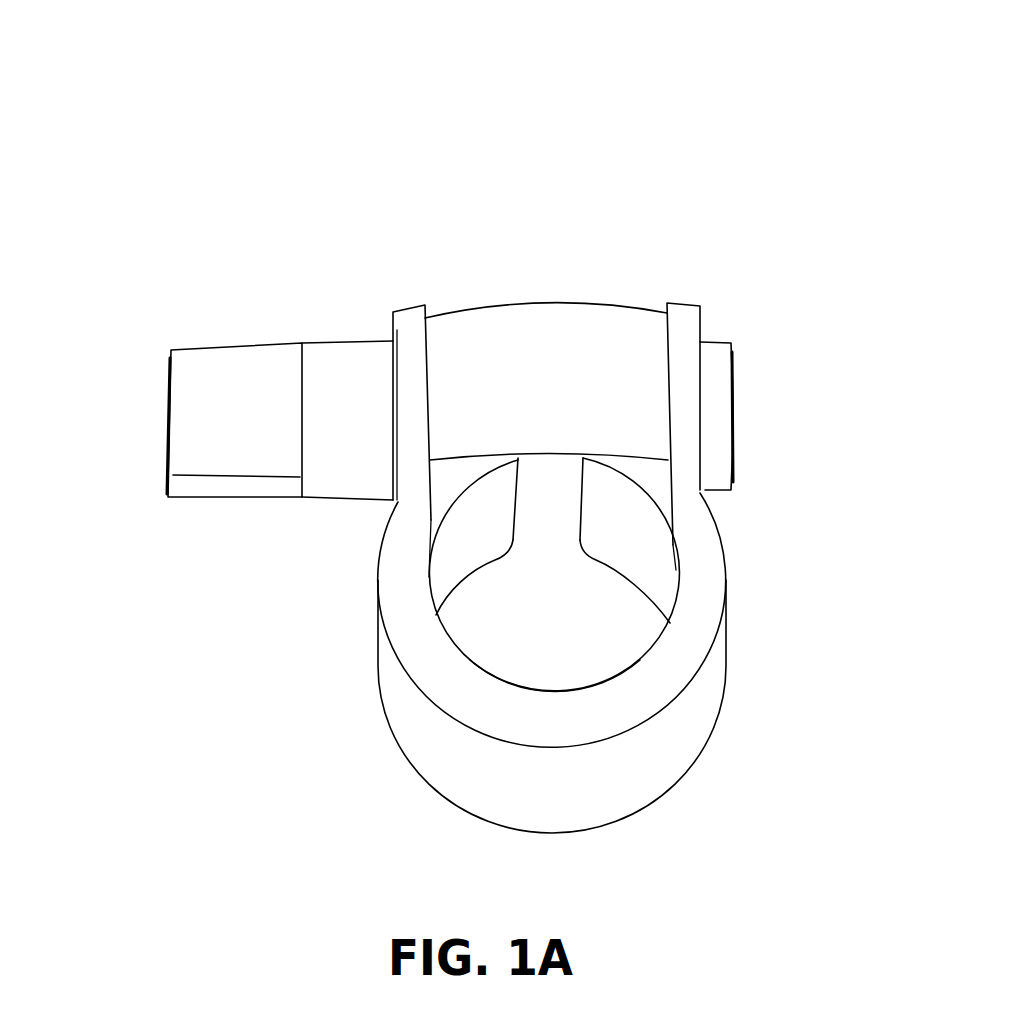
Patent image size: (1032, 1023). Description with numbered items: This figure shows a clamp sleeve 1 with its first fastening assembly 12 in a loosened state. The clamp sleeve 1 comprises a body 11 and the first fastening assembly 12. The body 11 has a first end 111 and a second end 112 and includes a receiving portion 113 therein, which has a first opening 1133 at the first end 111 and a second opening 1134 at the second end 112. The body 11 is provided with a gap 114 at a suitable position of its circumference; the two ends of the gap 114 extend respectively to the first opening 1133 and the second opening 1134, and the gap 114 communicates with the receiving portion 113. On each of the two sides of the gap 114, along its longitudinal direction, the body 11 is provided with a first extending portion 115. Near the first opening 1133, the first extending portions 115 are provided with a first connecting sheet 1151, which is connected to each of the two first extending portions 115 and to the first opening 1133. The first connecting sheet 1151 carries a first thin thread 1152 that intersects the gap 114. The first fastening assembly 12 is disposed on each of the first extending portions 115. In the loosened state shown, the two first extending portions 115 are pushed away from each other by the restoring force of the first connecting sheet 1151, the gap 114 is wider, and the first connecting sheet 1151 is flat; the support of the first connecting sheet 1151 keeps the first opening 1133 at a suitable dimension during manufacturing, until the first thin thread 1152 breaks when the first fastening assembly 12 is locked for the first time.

The clamp sleeve 1 is at (727, 106).
The body 11 is at (376, 640).
The first end 111 is at (725, 535).
The second end 112 is at (698, 755).
The receiving portion 113 is at (498, 588).
The first opening 1133 is at (605, 681).
The second opening 1134 is at (653, 598).
The gap 114 is at (535, 500).
The first extending portion 115 is at (410, 327).
The first connecting sheet 1151 is at (596, 332).
The first thin thread 1152 is at (466, 453).
The first fastening assembly 12 is at (219, 350).